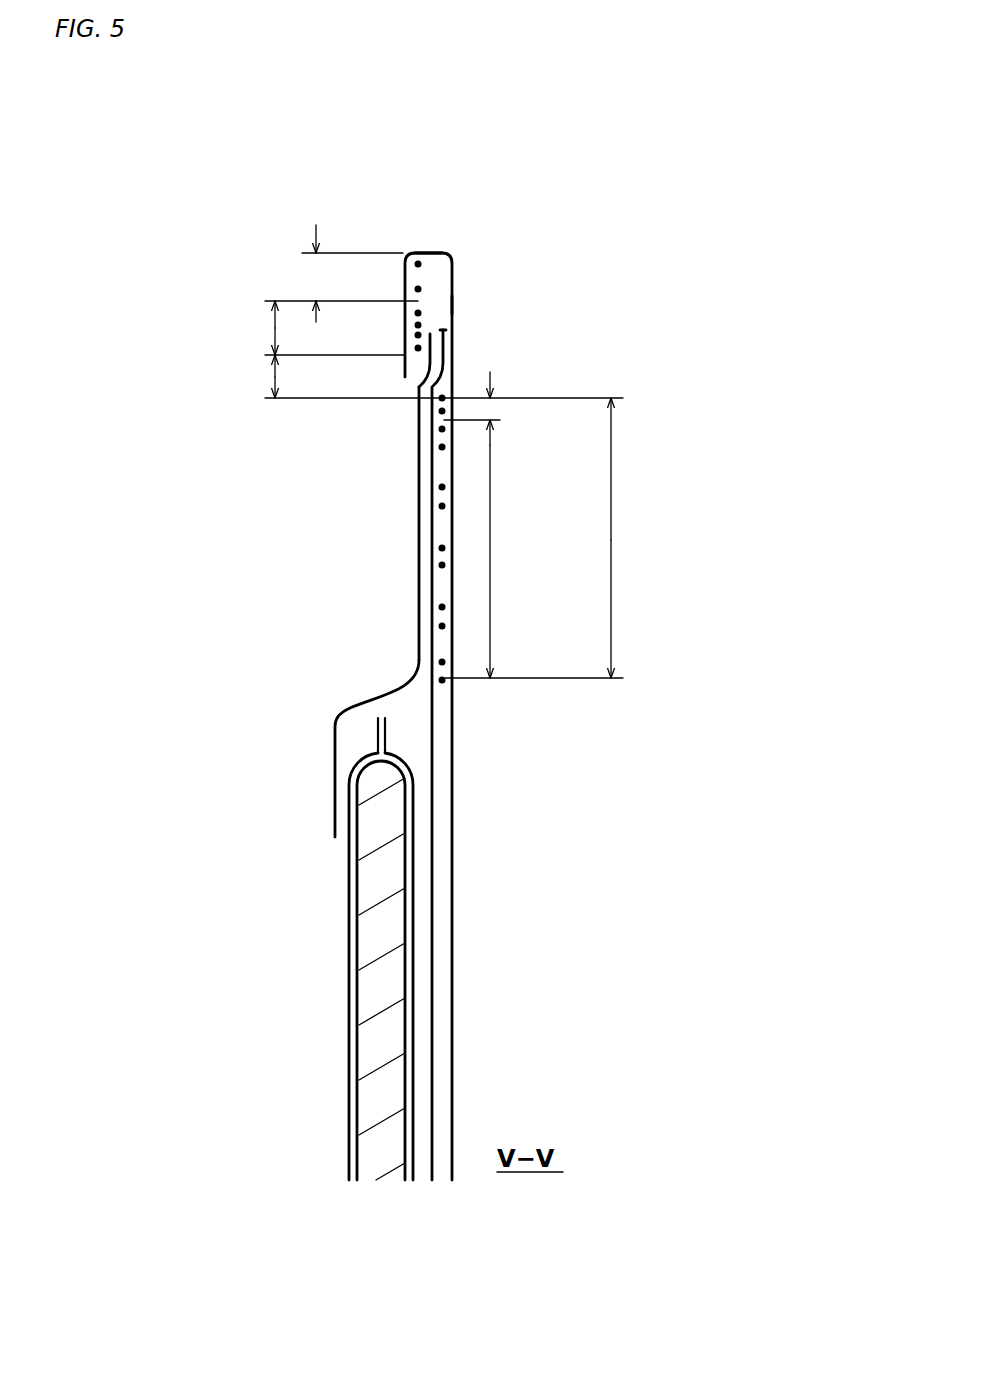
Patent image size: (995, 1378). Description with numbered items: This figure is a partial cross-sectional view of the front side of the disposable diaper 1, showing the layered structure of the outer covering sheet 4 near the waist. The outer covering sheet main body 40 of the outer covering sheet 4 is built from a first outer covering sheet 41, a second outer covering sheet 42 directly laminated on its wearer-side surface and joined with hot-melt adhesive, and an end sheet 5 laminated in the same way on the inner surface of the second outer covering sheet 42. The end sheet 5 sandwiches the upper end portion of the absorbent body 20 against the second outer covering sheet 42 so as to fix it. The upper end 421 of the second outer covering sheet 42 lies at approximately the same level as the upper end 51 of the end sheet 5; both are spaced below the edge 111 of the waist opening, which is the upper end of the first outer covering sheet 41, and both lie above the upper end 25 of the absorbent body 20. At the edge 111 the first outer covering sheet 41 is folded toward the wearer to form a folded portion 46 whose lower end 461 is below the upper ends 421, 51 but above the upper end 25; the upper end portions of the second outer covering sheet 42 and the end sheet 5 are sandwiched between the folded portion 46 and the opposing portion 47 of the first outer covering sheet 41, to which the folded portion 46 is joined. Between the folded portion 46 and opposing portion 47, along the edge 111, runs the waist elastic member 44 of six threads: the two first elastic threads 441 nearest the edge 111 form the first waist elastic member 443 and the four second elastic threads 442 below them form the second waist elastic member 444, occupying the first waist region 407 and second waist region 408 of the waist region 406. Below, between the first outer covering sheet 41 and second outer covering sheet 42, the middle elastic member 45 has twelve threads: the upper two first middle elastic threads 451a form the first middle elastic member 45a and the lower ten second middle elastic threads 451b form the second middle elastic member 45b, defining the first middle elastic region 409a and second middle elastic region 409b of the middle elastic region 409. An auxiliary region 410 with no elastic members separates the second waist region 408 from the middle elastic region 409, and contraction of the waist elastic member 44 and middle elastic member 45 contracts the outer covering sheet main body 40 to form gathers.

The disposable diaper 1 is at (270, 168).
The outer covering sheet 4 is at (578, 808).
The end sheet 5 is at (419, 612).
The absorbent body 20 is at (346, 1010).
The upper end of the absorbent body 25 is at (374, 716).
The outer covering sheet main body 40 is at (524, 756).
The first outer covering sheet 41 is at (454, 722).
The second outer covering sheet 42 is at (434, 752).
The waist elastic member 44 is at (700, 305).
The middle elastic member 45 is at (196, 501).
The first middle elastic member 45a is at (294, 460).
The second middle elastic member 45b is at (294, 541).
The folded portion 46 is at (402, 368).
The opposing portion 47 is at (455, 305).
The upper end of the end sheet 51 is at (412, 325).
The edge of the waist opening 111 is at (431, 250).
The waist region 406 is at (183, 283).
The first waist region 407 is at (314, 275).
The second waist region 408 is at (275, 328).
The middle elastic region 409 is at (611, 543).
The first middle elastic region 409a is at (490, 410).
The second middle elastic region 409b is at (490, 553).
The auxiliary region 410 is at (275, 374).
The upper end of the second outer covering sheet 421 is at (450, 330).
The first elastic threads 441 is at (420, 264).
The second elastic threads 442 is at (420, 313).
The first waist elastic member 443 is at (602, 255).
The second waist elastic member 444 is at (602, 347).
The first middle elastic threads 451a is at (442, 411).
The second middle elastic threads 451b is at (442, 487).
The lower end of the folded portion 461 is at (442, 398).